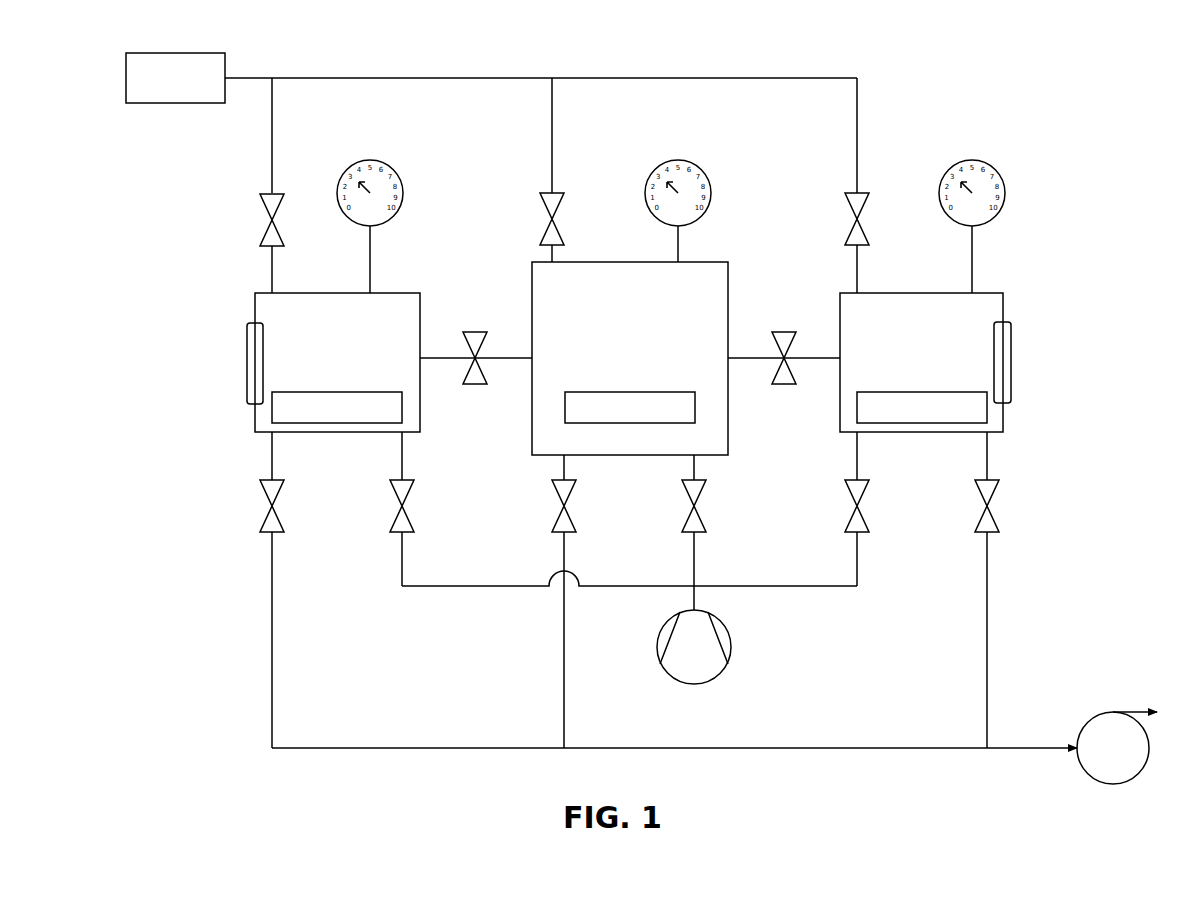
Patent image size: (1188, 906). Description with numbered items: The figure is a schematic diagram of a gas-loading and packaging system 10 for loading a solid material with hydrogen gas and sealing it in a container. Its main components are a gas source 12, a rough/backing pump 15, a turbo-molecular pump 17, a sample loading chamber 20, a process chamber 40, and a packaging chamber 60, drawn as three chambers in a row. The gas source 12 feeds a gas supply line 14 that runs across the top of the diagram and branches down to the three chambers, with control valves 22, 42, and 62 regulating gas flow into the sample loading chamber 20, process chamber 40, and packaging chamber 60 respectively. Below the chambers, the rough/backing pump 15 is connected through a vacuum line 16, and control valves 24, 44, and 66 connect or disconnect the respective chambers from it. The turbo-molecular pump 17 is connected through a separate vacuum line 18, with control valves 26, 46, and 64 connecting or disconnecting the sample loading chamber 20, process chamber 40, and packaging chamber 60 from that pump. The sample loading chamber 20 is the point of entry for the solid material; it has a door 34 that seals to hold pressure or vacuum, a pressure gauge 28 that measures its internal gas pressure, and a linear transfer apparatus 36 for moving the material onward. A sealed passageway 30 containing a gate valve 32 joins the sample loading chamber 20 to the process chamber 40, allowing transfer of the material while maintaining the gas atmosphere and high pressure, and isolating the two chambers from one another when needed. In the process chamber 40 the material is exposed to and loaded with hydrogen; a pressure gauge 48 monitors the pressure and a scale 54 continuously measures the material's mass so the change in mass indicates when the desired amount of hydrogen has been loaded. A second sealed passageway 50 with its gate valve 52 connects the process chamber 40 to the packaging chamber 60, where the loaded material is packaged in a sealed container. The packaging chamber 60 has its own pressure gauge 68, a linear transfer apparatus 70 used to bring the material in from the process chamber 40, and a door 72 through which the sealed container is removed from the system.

The gas-loading and packaging system 10 is at (962, 58).
The gas source 12 is at (178, 104).
The gas supply line 14 is at (410, 78).
The rough/backing pump 15 is at (1140, 775).
The vacuum line 16 is at (815, 750).
The turbo-molecular pump 17 is at (730, 636).
The vacuum line 18 is at (815, 588).
The sample loading chamber 20 is at (337, 386).
The control valve 22 is at (270, 225).
The control valve 24 is at (270, 512).
The control valve 26 is at (400, 512).
The pressure gauge 28 is at (393, 170).
The sealed passageway 30 is at (445, 300).
The gate valve 32 is at (475, 333).
The door 34 is at (247, 368).
The linear transfer apparatus 36 is at (337, 407).
The process chamber 40 is at (630, 371).
The control valve 42 is at (550, 225).
The control valve 44 is at (562, 512).
The control valve 46 is at (692, 512).
The pressure gauge 48 is at (701, 170).
The sealed passageway 50 is at (812, 308).
The gate valve 52 is at (784, 332).
The scale 54 is at (630, 407).
The packaging chamber 60 is at (921, 386).
The control valve 62 is at (855, 225).
The control valve 64 is at (855, 512).
The control valve 66 is at (985, 512).
The pressure gauge 68 is at (995, 170).
The linear transfer apparatus 70 is at (922, 407).
The door 72 is at (1011, 377).